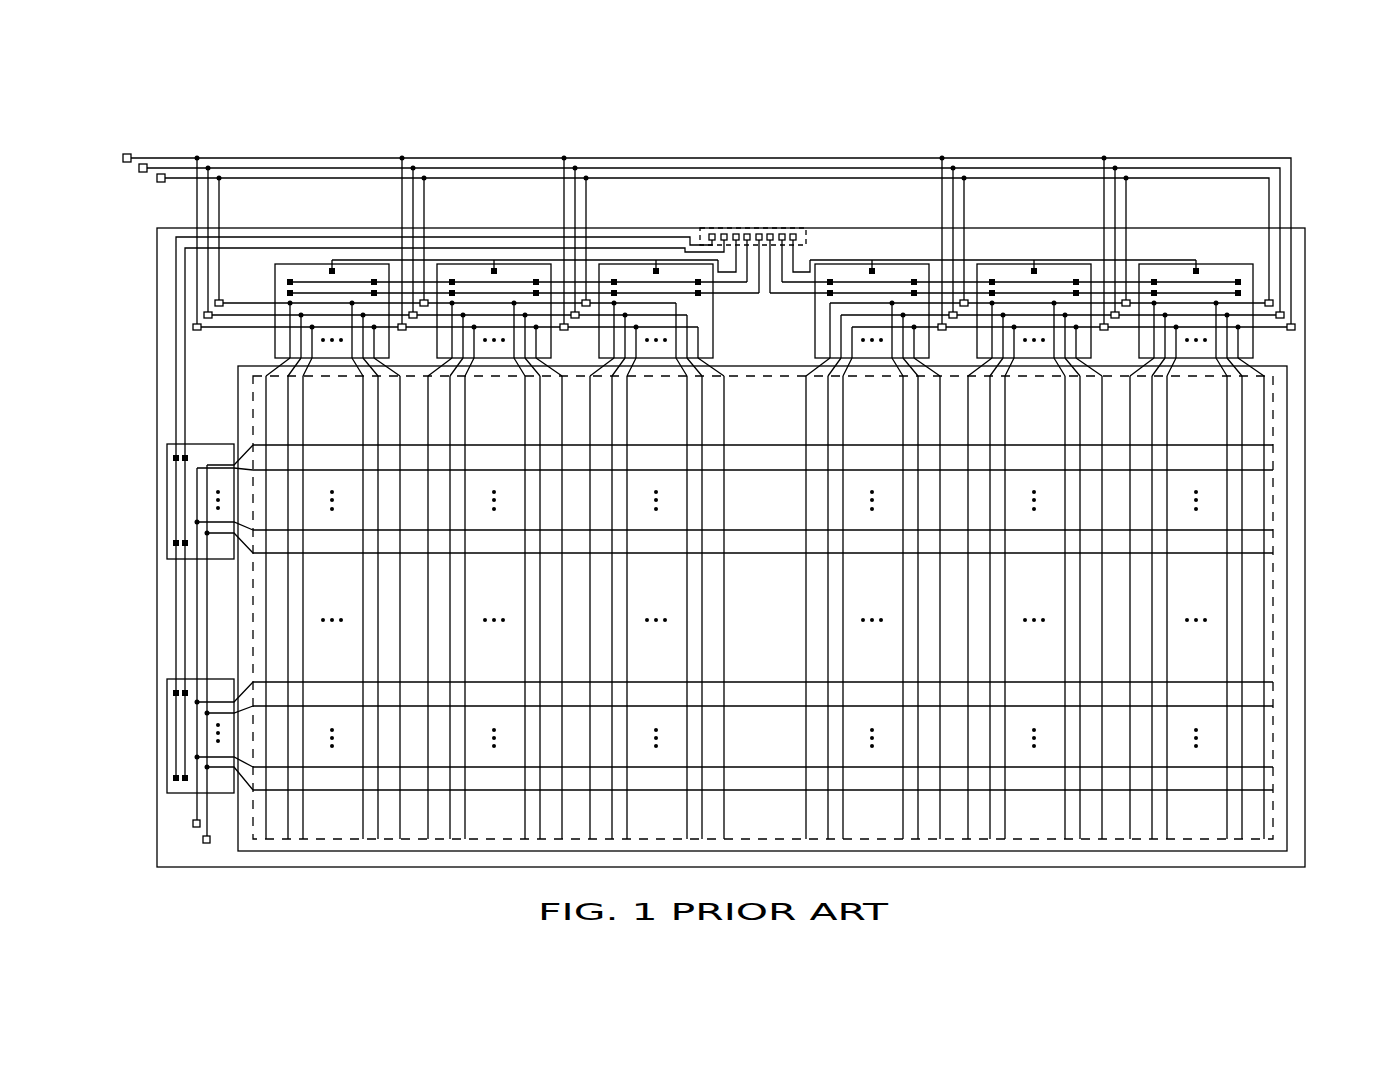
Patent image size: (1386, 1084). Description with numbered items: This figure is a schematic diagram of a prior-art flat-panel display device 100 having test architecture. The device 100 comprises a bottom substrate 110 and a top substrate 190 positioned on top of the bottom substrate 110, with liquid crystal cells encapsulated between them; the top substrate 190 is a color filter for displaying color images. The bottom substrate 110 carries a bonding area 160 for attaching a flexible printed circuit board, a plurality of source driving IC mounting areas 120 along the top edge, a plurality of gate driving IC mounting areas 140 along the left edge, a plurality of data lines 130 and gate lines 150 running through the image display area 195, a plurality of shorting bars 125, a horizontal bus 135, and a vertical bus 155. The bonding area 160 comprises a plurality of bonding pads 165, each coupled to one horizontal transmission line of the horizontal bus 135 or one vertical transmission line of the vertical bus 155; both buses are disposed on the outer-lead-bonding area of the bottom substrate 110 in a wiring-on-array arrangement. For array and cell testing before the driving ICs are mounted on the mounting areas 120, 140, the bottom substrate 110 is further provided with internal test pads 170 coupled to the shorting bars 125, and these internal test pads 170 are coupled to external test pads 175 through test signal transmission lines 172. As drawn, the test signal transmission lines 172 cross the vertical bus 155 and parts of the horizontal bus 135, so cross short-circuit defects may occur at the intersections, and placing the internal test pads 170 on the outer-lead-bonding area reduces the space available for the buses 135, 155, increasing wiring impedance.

The flat-panel display device 100 is at (1291, 140).
The bottom substrate 110 is at (1306, 590).
The source driving IC mounting areas 120 is at (1252, 345).
The shorting bars 125 is at (242, 343).
The data lines 130 is at (725, 588).
The horizontal bus 135 is at (731, 306).
The gate driving IC mounting areas 140 is at (185, 797).
The gate lines 150 is at (738, 469).
The vertical bus 155 is at (167, 417).
The bonding area 160 is at (807, 232).
The bonding pads 165 is at (740, 233).
The internal test pads 170 is at (192, 327).
The test signal transmission lines 172 is at (266, 144).
The external test pads 175 is at (129, 165).
The top substrate 190 is at (1288, 655).
The image display area 195 is at (1274, 738).